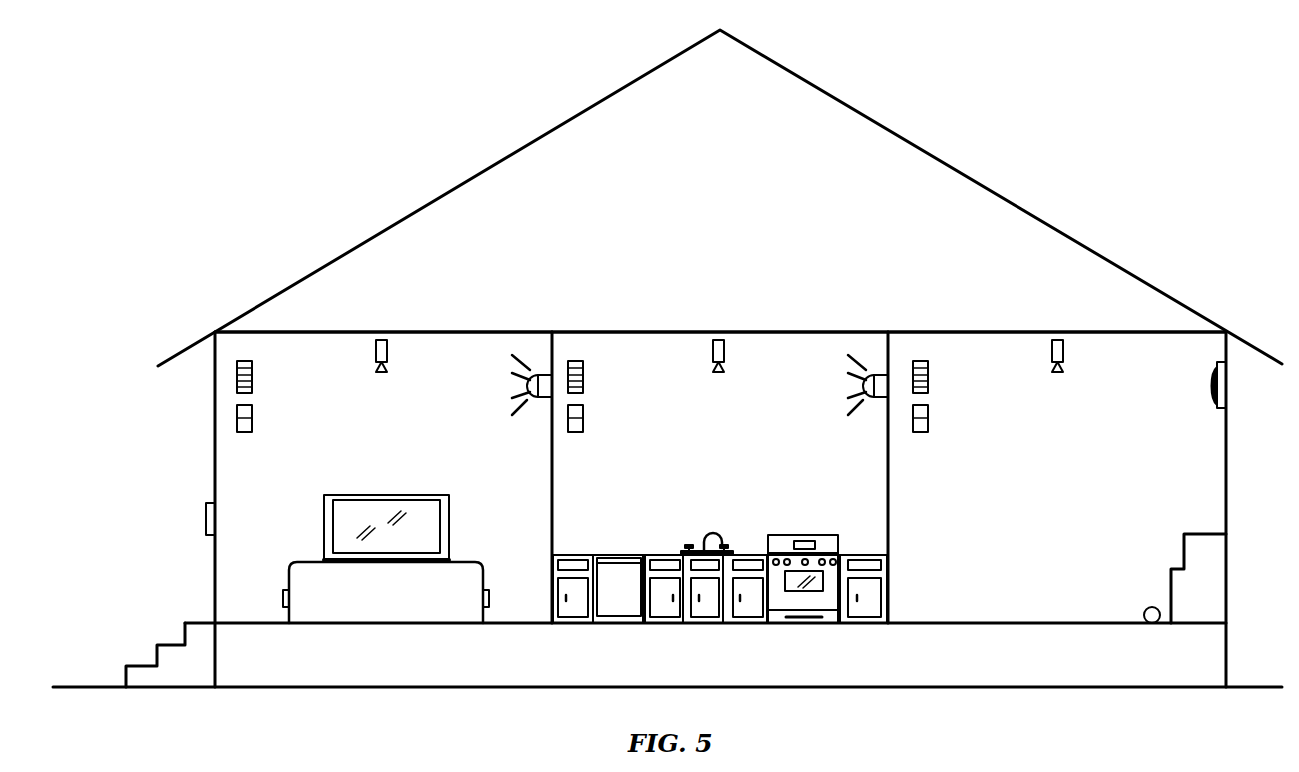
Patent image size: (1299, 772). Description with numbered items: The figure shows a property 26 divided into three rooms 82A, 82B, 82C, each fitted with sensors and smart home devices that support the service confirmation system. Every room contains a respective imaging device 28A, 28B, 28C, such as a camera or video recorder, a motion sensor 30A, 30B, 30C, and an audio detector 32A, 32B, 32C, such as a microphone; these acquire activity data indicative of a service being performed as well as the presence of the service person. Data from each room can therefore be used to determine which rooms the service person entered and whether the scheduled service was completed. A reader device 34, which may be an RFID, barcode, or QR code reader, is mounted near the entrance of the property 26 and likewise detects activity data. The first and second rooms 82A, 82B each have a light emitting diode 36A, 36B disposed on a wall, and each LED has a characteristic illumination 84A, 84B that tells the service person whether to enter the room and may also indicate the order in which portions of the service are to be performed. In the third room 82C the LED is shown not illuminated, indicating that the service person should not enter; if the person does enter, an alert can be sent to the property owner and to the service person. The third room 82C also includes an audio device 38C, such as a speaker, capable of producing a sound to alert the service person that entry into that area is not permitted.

The property 26 is at (1003, 197).
The room 82A is at (396, 298).
The room 82B is at (731, 298).
The room 82C is at (1013, 299).
The imaging device 28A is at (388, 350).
The imaging device 28B is at (725, 350).
The imaging device 28C is at (1064, 350).
The audio detector 32A is at (254, 367).
The audio detector 32B is at (585, 367).
The audio detector 32C is at (930, 367).
The motion sensor 30A is at (246, 432).
The motion sensor 30B is at (577, 432).
The motion sensor 30C is at (922, 432).
The light emitting diode 36A is at (542, 375).
The light emitting diode 36B is at (878, 375).
The illumination 84A is at (520, 416).
The illumination 84B is at (856, 416).
The audio device 38C is at (1206, 382).
The reader device 34 is at (206, 513).